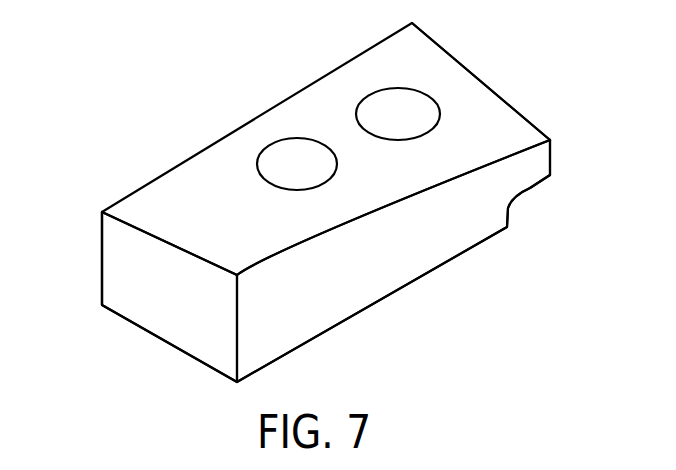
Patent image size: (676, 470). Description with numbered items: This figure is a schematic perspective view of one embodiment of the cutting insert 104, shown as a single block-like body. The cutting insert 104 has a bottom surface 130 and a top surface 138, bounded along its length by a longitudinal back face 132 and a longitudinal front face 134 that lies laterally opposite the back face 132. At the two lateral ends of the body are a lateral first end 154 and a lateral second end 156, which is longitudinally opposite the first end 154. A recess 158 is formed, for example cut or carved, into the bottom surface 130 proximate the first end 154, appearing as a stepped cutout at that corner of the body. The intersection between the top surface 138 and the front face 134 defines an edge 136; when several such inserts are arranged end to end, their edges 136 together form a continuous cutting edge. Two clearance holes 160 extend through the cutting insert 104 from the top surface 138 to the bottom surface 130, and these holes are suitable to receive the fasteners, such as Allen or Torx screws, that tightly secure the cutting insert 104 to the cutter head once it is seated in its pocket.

The cutting insert 104 is at (165, 117).
The bottom surface 130 is at (342, 322).
The longitudinal back face 132 is at (100, 232).
The longitudinal front face 134 is at (413, 258).
The edge 136 is at (327, 228).
The top surface 138 is at (468, 72).
The lateral first end 154 is at (532, 118).
The lateral second end 156 is at (167, 305).
The recess 158 is at (532, 187).
The clearance holes 160 is at (293, 138).